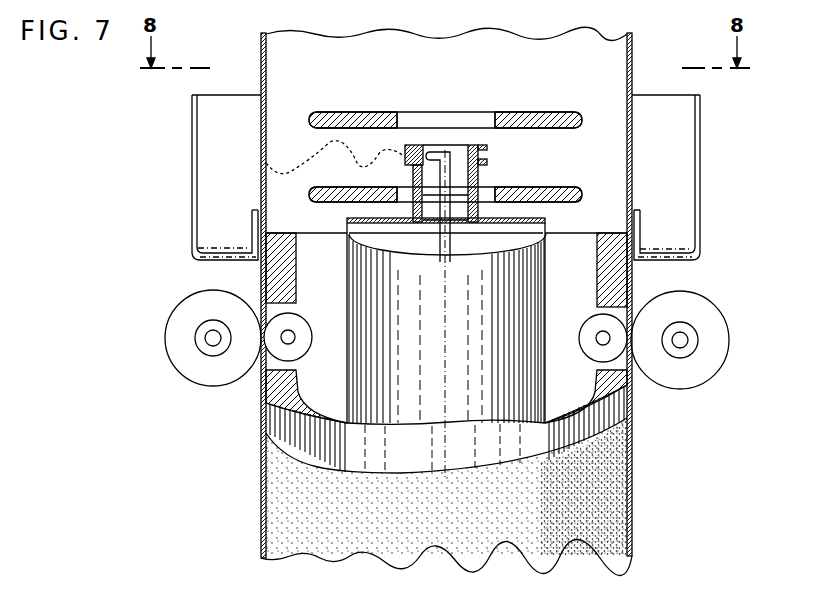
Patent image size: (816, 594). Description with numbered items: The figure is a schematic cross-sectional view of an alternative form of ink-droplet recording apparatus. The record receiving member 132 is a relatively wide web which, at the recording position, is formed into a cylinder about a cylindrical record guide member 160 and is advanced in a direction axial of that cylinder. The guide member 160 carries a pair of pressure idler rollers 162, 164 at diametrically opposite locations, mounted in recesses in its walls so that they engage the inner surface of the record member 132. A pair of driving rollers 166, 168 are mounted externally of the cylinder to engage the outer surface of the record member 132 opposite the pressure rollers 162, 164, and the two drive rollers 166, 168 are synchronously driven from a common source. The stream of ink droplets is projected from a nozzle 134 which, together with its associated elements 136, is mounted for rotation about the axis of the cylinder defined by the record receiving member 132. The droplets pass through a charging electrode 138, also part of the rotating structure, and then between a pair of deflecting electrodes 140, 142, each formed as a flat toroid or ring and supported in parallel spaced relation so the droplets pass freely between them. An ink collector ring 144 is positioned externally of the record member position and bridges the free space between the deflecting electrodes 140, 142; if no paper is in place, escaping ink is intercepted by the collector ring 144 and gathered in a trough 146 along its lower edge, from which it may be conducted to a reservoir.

The record receiving member 132 is at (262, 50).
The nozzle 134 is at (437, 152).
The associated elements of the nozzle 136 is at (550, 258).
The charging electrode 138 is at (412, 145).
The deflecting electrode 140 is at (357, 112).
The deflecting electrode 142 is at (535, 187).
The ink collector ring 144 is at (192, 152).
The trough 146 is at (222, 247).
The cylindrical record guide member 160 is at (283, 275).
The pressure idler roller 162 is at (298, 327).
The pressure idler roller 164 is at (588, 327).
The driving roller 166 is at (180, 325).
The driving roller 168 is at (718, 327).